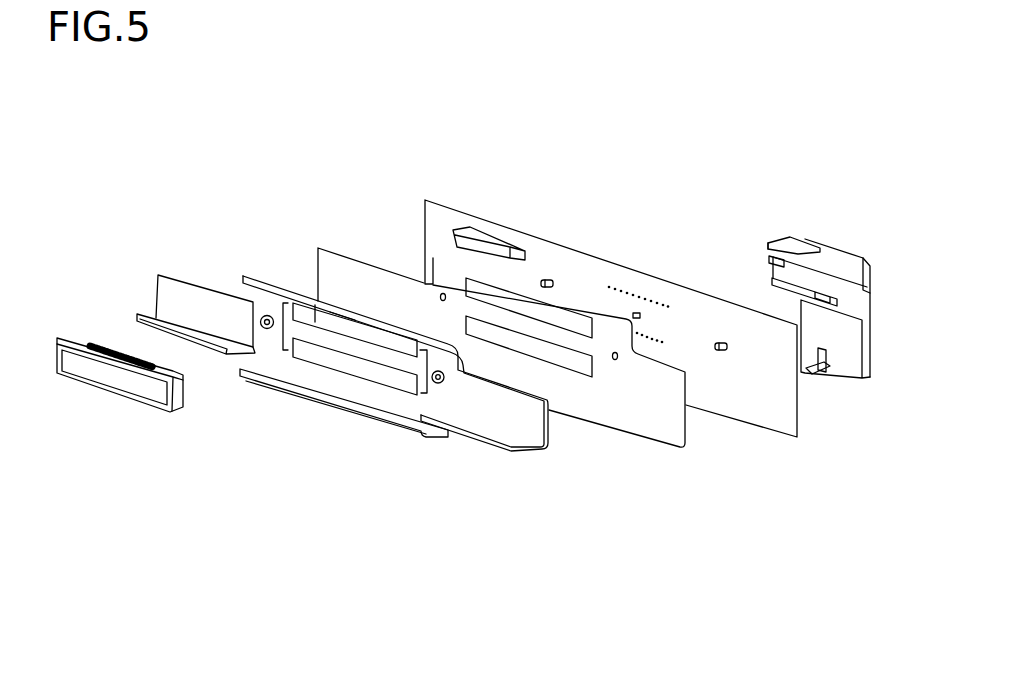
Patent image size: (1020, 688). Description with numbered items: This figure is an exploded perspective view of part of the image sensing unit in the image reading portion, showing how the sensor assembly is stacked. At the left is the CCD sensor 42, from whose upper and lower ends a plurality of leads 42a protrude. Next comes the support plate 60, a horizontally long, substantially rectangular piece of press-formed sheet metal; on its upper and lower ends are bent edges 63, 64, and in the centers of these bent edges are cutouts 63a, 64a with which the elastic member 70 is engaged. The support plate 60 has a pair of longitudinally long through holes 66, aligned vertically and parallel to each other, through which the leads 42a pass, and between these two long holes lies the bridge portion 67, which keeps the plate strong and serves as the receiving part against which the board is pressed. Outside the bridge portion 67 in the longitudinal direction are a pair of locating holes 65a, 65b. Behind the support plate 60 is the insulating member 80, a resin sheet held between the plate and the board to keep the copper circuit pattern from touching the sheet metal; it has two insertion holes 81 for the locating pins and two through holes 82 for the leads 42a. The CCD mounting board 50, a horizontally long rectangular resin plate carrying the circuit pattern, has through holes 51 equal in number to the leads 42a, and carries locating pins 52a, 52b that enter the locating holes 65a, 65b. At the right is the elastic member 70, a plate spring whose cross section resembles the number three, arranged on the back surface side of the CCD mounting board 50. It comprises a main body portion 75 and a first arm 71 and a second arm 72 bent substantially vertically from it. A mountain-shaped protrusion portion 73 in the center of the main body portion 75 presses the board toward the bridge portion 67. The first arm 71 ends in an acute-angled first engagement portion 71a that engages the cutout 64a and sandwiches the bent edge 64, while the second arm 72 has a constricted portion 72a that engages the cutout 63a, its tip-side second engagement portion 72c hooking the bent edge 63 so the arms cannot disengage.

The CCD sensor 42 is at (77, 338).
The leads 42a is at (167, 368).
The CCD mounting board 50 is at (465, 213).
The through holes 51 is at (628, 287).
The locating pin 52a is at (551, 280).
The locating pin 52b is at (720, 353).
The support plate 60 is at (190, 275).
The bent edge 63 is at (246, 275).
The cutout 63a is at (342, 308).
The bent edge 64 is at (250, 375).
The cutout 64a is at (335, 407).
The locating hole 65a is at (270, 314).
The locating hole 65b is at (437, 385).
The through holes 66 is at (312, 365).
The bridge portion 67 is at (395, 363).
The elastic member 70 is at (805, 242).
The first arm 71 is at (812, 378).
The first engagement portion 71a is at (822, 370).
The second arm 72 is at (786, 240).
The constricted portion 72a is at (768, 244).
The second engagement portion 72c is at (770, 259).
The protrusion portion 73 is at (772, 281).
The main body portion 75 is at (858, 283).
The insulating member 80 is at (387, 270).
The insertion holes 81 is at (443, 293).
The through holes 82 is at (573, 313).